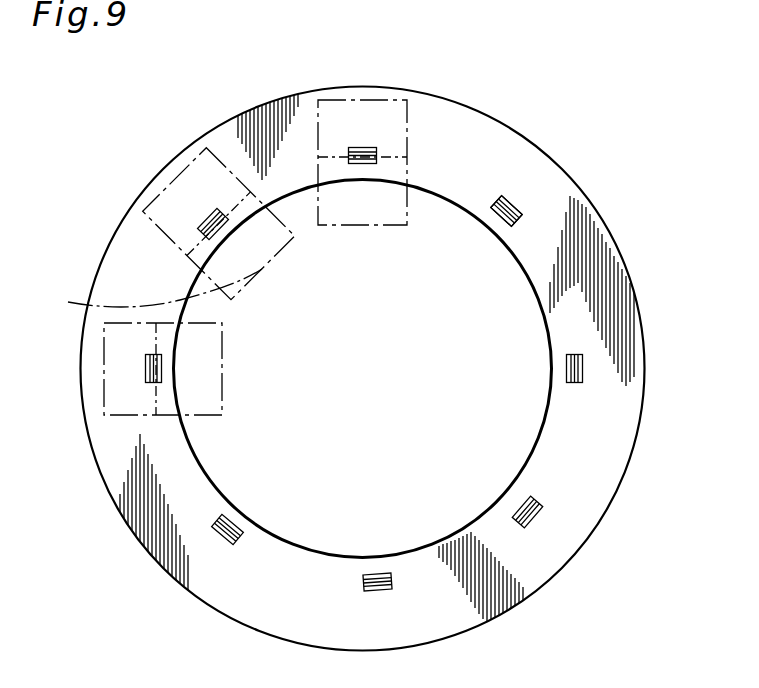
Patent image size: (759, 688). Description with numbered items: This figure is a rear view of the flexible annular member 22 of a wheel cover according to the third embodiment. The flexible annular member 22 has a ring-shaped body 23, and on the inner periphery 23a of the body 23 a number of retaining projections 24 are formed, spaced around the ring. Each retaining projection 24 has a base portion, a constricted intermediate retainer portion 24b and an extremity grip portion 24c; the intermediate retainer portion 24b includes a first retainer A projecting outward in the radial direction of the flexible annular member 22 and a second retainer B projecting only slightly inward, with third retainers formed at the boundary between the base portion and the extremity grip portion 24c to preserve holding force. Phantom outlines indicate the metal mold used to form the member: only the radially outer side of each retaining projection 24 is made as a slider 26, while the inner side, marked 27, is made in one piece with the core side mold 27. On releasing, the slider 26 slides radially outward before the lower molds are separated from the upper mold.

The flexible annular member 22 is at (643, 337).
The body of the flexible annular member 23 is at (588, 472).
The inner periphery 23a is at (553, 287).
The retaining projection 24 is at (366, 147).
The intermediate retainer portion 24b is at (512, 204).
The extremity grip portion 24c is at (503, 196).
The slider 26 is at (145, 217).
The core side mold 27 is at (141, 297).